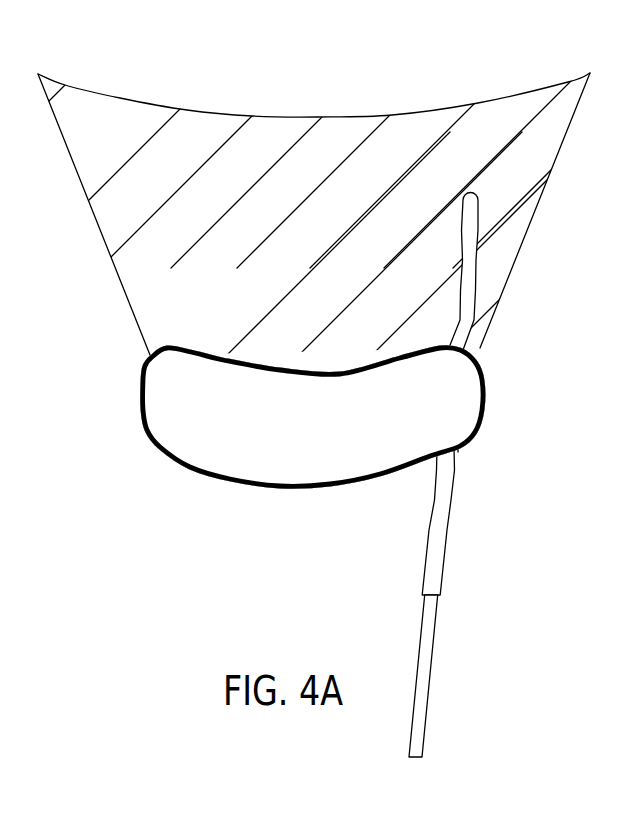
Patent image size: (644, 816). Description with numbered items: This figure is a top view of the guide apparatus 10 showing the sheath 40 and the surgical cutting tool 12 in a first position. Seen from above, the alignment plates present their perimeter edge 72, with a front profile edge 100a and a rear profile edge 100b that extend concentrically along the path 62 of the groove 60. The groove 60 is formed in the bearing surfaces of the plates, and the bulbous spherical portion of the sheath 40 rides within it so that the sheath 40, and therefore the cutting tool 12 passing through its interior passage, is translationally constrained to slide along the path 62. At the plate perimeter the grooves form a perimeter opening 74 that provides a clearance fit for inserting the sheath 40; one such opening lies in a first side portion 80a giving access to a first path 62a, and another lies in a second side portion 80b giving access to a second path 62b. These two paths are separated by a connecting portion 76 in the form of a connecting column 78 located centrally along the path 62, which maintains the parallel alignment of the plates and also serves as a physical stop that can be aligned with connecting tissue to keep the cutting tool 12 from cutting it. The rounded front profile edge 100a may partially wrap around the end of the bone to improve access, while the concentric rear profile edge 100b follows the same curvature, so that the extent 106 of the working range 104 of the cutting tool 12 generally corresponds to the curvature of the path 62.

The guide apparatus 10 is at (223, 555).
The surgical cutting tool 12 is at (435, 575).
The sheath 40 is at (458, 428).
The groove 60 is at (145, 370).
The path 62 is at (183, 402).
The first path 62a is at (288, 446).
The second path 62b is at (368, 428).
The perimeter edge 72 is at (193, 343).
The perimeter opening 74 is at (128, 385).
The connecting portion 76 is at (303, 437).
The connecting column 78 is at (248, 477).
The first side portion 80a is at (103, 425).
The second side portion 80b is at (502, 399).
The front profile edge 100a is at (332, 365).
The rear profile edge 100b is at (382, 483).
The working range 104 is at (281, 176).
The extent 106 is at (510, 93).